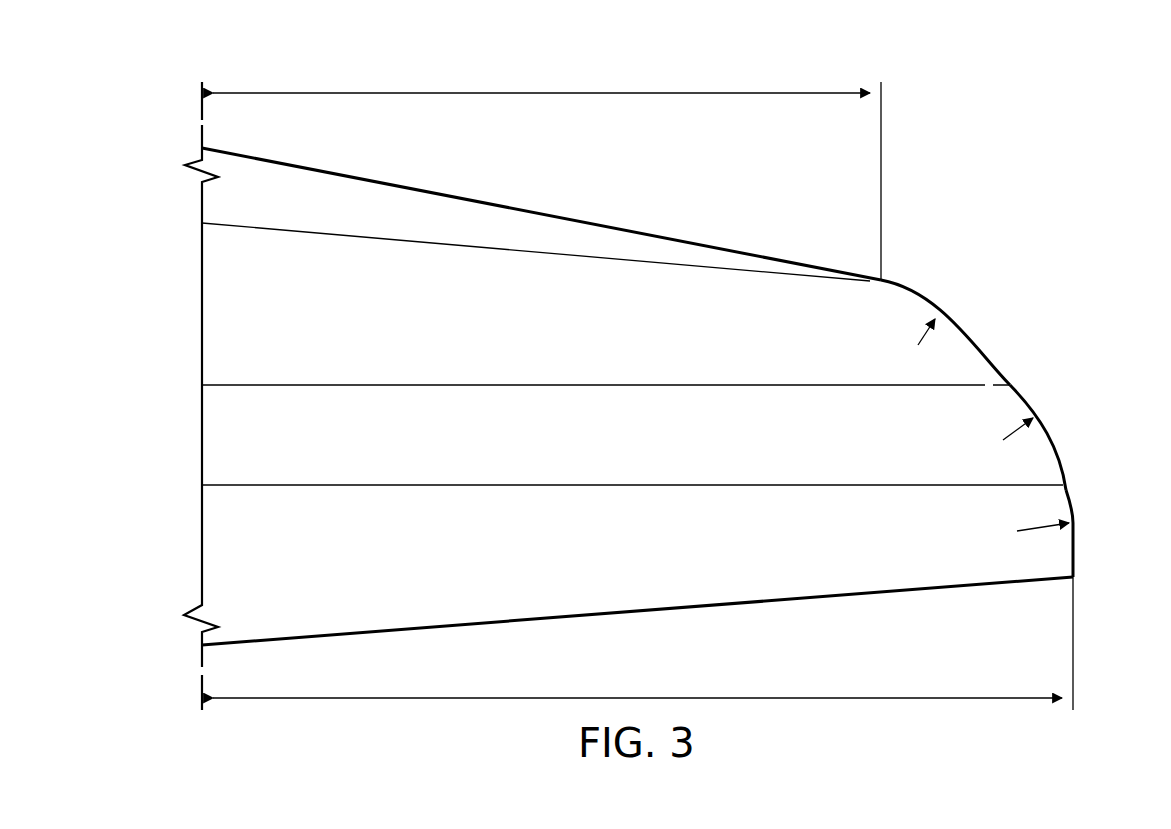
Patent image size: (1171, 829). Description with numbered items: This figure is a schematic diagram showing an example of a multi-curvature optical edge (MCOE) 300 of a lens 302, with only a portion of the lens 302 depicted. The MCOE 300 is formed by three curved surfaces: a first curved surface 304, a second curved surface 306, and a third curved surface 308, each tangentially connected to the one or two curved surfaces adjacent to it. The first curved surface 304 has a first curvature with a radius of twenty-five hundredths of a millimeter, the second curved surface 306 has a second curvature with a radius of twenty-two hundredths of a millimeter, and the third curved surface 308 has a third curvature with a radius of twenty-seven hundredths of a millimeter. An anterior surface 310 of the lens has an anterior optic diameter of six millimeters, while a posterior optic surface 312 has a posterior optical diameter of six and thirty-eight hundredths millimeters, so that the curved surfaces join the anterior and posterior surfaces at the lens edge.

The multi-curvature optical edge 300 is at (1022, 128).
The lens 302 is at (642, 452).
The first curved surface 304 is at (968, 335).
The second curved surface 306 is at (1053, 438).
The third curved surface 308 is at (1077, 543).
The anterior surface 310 is at (550, 213).
The posterior optic surface 312 is at (741, 603).